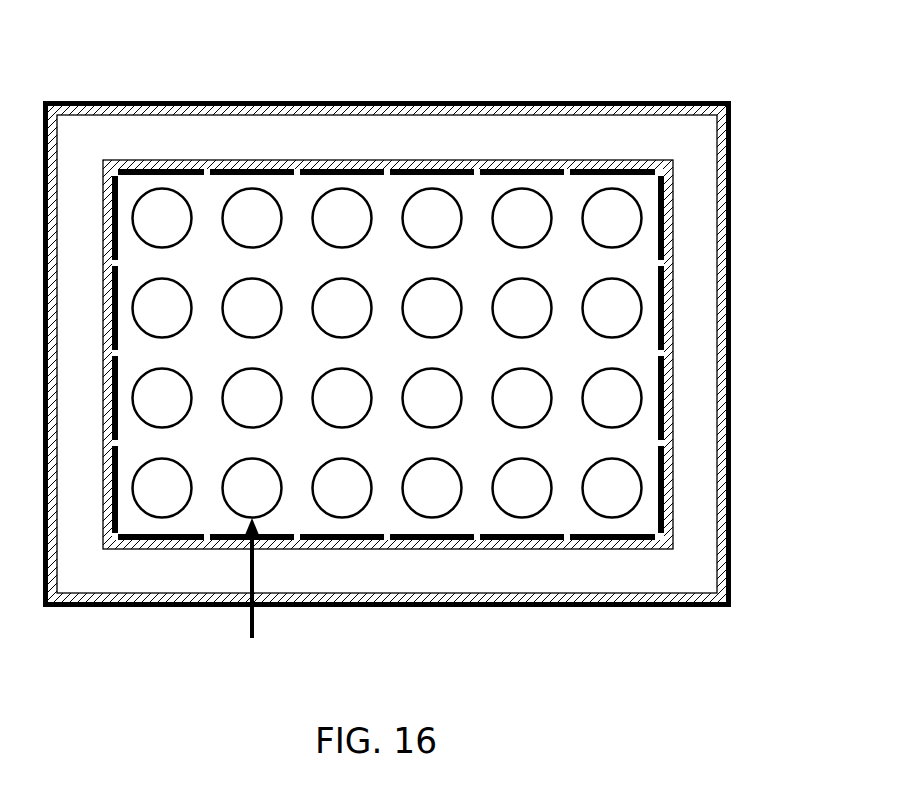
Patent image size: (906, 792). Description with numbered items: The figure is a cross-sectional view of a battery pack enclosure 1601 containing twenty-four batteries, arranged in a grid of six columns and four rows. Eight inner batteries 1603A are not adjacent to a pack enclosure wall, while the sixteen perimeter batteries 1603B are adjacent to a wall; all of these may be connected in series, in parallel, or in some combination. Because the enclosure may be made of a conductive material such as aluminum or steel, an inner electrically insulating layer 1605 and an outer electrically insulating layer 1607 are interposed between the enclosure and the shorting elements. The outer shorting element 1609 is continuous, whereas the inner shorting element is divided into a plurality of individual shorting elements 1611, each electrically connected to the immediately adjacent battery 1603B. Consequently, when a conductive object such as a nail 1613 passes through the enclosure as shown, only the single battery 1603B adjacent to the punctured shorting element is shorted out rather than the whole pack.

The battery pack enclosure 1601 is at (161, 135).
The batteries not adjacent to a pack enclosure wall 1603A is at (387, 353).
The batteries adjacent to a pack enclosure wall 1603B is at (387, 353).
The inner electrically insulating layer 1605 is at (497, 160).
The outer electrically insulating layer 1607 is at (266, 103).
The outer shorting element 1609 is at (628, 103).
The shorting elements 1611 is at (673, 488).
The nail 1613 is at (255, 615).